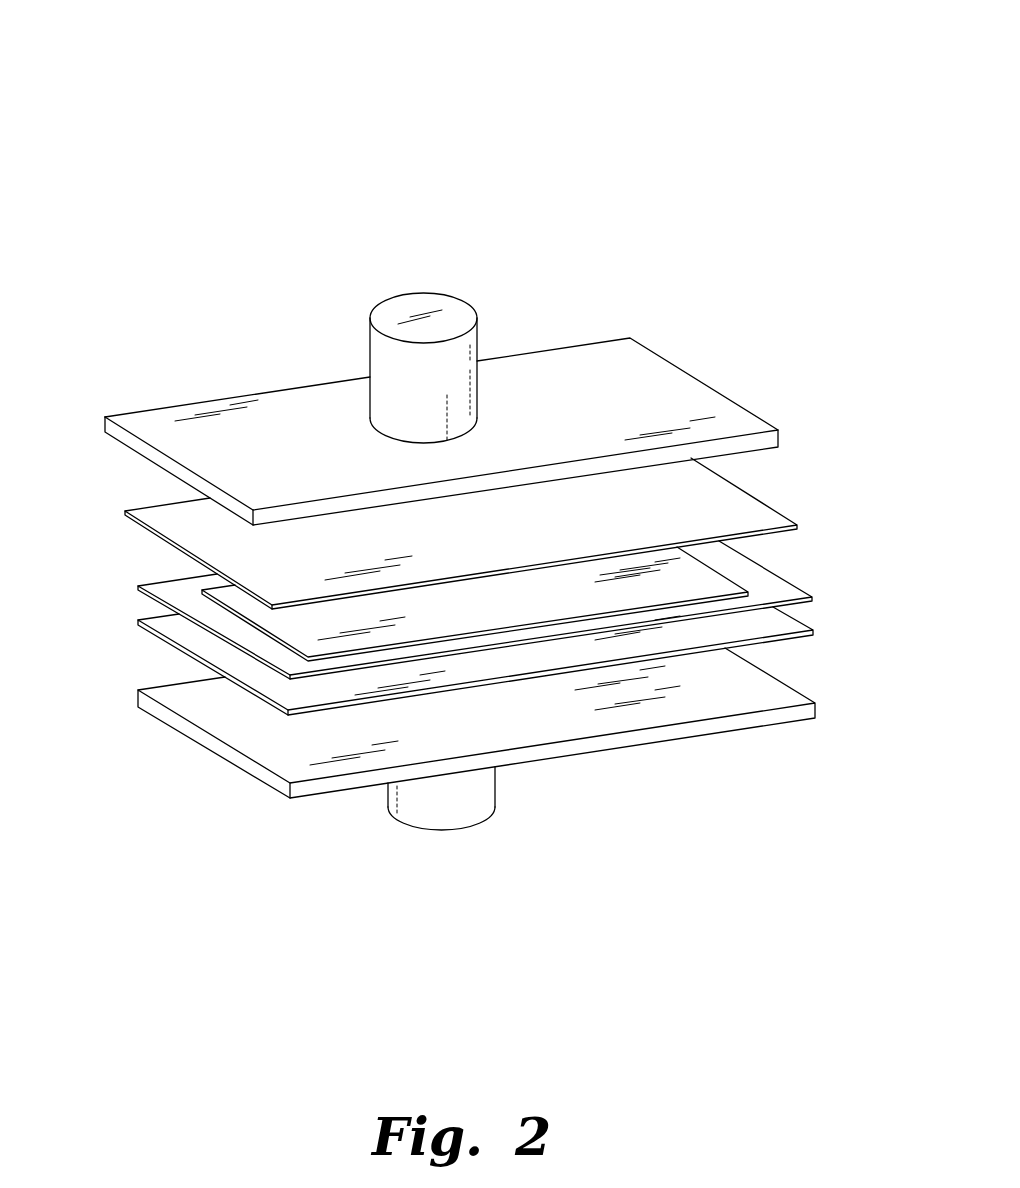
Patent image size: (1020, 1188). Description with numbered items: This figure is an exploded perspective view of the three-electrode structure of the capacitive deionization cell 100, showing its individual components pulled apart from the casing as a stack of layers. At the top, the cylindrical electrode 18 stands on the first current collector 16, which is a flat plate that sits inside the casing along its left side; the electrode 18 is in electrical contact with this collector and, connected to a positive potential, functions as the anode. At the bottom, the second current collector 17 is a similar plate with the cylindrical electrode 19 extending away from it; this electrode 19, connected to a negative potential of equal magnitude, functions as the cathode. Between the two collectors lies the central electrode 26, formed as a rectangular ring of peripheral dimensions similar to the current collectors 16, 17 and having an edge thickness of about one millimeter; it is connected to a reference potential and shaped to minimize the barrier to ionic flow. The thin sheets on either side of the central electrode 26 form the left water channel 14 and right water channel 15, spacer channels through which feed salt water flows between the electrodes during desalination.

The capacitive deionization cell 100 is at (712, 132).
The left water channel 14 is at (215, 535).
The right water channel 15 is at (215, 648).
The first current collector 16 is at (757, 412).
The second current collector 17 is at (755, 703).
The cylindrical electrode 18 is at (480, 343).
The cylindrical electrode 19 is at (457, 800).
The central electrode 26 is at (770, 588).